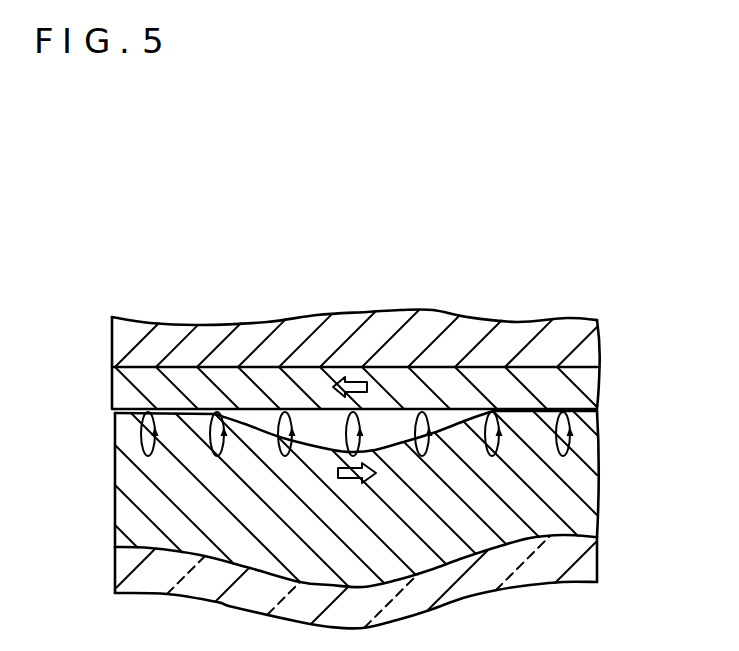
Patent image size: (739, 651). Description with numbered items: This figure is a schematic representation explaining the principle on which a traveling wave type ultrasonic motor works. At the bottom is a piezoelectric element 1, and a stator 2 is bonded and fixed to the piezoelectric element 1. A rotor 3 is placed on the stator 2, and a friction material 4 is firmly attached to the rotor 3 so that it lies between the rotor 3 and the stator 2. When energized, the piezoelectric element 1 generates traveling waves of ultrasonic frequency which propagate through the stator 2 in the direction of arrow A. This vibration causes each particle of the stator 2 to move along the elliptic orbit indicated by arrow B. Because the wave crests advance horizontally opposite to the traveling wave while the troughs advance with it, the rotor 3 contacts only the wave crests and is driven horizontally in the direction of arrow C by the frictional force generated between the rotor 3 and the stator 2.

The piezoelectric element 1 is at (590, 557).
The stator 2 is at (590, 462).
The rotor 3 is at (585, 342).
The friction material 4 is at (590, 378).
The direction of traveling wave propagation A is at (369, 475).
The elliptic orbit of stator particles B is at (155, 440).
The direction of rotor drive C is at (339, 390).